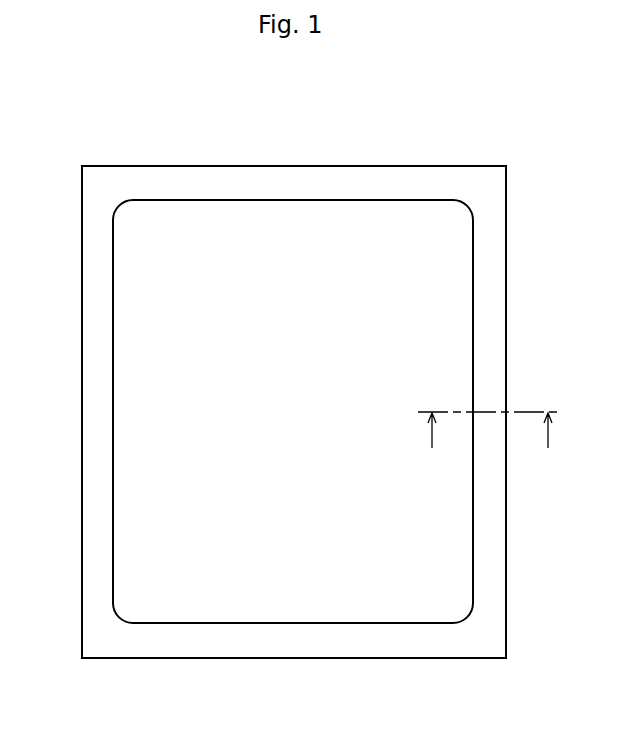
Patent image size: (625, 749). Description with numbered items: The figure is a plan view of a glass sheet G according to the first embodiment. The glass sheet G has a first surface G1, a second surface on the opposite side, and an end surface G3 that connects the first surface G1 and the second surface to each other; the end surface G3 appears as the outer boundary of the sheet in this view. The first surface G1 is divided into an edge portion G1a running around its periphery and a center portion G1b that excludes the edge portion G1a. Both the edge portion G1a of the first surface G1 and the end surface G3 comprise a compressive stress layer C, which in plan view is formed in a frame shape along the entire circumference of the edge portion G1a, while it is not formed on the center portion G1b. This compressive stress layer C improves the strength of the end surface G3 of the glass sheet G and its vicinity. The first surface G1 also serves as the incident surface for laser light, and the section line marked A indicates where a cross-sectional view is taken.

The glass sheet G is at (376, 148).
The first surface G1 is at (204, 234).
The edge portion G1a is at (492, 242).
The center portion G1b is at (160, 472).
The end surface G3 is at (283, 165).
The compressive stress layer C is at (490, 527).
The section line A- A is at (489, 432).